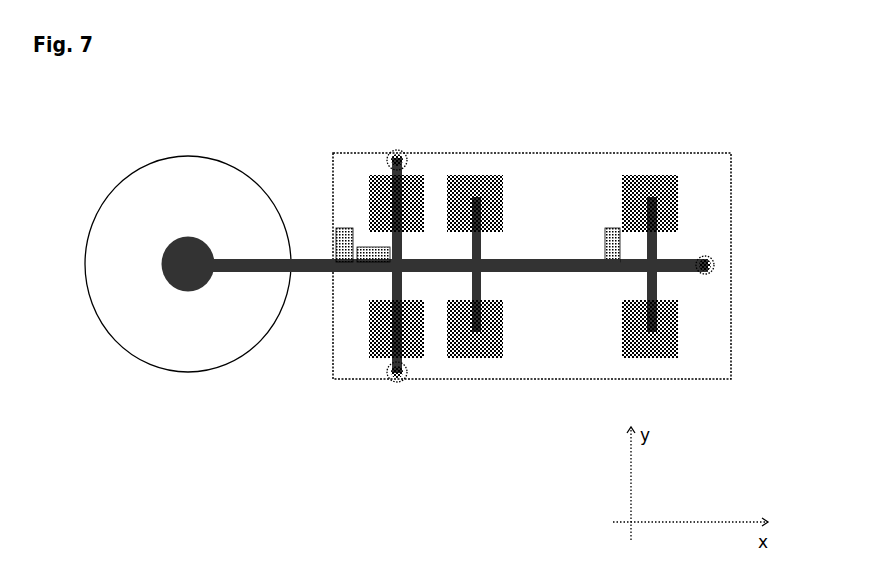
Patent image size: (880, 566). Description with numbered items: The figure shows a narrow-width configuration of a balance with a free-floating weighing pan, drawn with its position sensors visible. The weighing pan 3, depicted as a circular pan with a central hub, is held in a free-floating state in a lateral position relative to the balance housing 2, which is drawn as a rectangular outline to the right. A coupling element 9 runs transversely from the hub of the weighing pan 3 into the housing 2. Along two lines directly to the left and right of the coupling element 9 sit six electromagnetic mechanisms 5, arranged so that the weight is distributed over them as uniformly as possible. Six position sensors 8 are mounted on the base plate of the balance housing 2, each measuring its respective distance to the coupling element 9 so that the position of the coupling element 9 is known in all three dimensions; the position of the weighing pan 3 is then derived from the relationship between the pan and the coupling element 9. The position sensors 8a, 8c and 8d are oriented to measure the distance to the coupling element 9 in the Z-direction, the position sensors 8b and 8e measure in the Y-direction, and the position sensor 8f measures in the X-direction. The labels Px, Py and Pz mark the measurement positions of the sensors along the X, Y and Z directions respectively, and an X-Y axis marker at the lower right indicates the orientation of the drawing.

The balance housing 2 is at (120, 332).
The weighing pan 3 is at (190, 292).
The electromagnetic mechanism 5 is at (678, 206).
The position sensor 8 is at (489, 279).
The position sensor 8a is at (390, 152).
The position sensor 8b is at (603, 228).
The position sensor 8c is at (712, 259).
The position sensor 8d is at (395, 380).
The position sensor 8e is at (362, 266).
The position sensor 8f is at (328, 273).
The coupling element 9 is at (570, 273).
The actuator x Px is at (336, 228).
The actuator y Py is at (612, 228).
The actuator z Pz is at (363, 247).